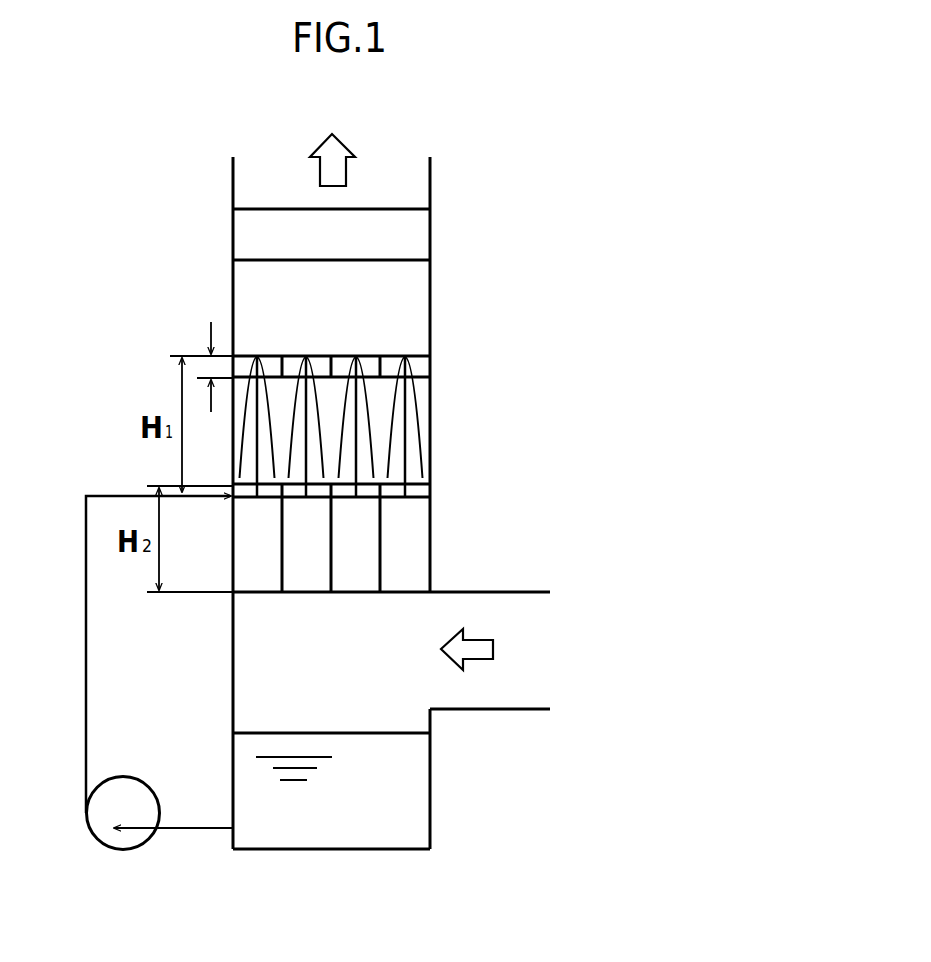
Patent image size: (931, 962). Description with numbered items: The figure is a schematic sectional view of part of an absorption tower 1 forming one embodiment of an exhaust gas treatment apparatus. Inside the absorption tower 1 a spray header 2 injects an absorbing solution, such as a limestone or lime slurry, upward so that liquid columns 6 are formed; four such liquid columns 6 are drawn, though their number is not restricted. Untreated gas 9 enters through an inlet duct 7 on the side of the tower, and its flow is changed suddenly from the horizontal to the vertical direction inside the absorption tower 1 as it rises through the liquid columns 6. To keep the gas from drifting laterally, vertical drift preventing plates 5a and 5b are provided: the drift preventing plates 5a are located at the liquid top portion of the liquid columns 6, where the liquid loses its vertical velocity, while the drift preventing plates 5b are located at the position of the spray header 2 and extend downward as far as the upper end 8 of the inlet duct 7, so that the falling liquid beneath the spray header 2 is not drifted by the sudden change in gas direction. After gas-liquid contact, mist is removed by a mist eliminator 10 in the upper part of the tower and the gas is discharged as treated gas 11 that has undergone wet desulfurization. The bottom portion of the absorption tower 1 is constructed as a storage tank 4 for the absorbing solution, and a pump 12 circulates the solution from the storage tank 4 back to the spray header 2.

The absorption tower 1 is at (434, 300).
The spray header 2 is at (413, 497).
The storage tank 4 is at (346, 827).
The drift preventing plate 5a is at (383, 362).
The drift preventing plate 5b is at (382, 556).
The liquid column 6 is at (420, 414).
The inlet duct 7 is at (528, 695).
The upper end of inlet duct 8 is at (515, 592).
The untreated gas 9 is at (473, 647).
The mist eliminator 10 is at (430, 227).
The treated gas 11 is at (333, 148).
The pump 12 is at (120, 852).